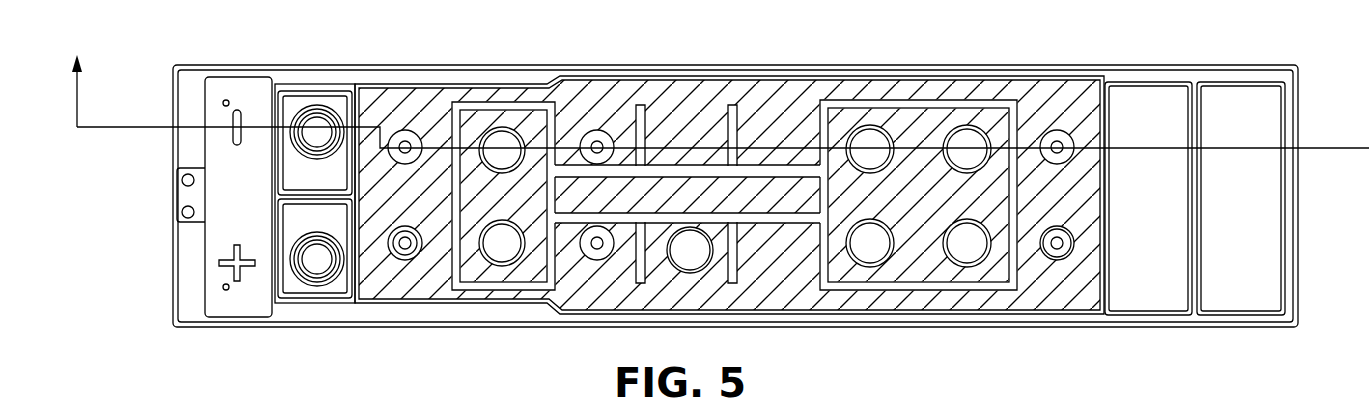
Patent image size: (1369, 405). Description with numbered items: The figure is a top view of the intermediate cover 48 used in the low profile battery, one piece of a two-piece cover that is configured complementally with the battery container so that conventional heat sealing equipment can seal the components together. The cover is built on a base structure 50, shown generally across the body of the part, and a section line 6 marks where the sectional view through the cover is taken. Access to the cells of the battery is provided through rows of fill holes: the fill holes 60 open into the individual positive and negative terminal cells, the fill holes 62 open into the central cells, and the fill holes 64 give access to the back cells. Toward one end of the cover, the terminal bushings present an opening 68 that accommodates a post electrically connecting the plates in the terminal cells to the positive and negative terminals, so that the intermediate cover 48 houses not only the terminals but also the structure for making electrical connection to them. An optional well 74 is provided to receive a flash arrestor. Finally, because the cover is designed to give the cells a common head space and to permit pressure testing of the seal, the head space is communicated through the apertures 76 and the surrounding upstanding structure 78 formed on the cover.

The section line 6- 6 is at (719, 89).
The intermediate cover 48 is at (156, 115).
The base structure 50 is at (593, 292).
The fill holes 60 is at (405, 130).
The fill holes 62 is at (588, 227).
The fill holes 64 is at (1052, 226).
The opening 68 is at (313, 118).
The well 74 is at (700, 268).
The apertures 76 is at (502, 128).
The upstanding structure 78 is at (860, 285).